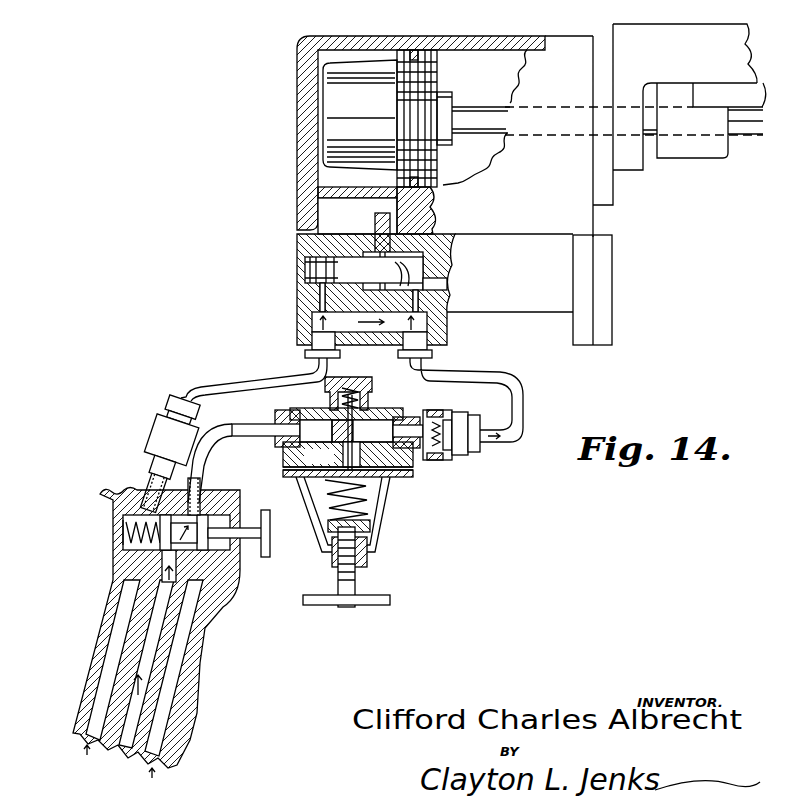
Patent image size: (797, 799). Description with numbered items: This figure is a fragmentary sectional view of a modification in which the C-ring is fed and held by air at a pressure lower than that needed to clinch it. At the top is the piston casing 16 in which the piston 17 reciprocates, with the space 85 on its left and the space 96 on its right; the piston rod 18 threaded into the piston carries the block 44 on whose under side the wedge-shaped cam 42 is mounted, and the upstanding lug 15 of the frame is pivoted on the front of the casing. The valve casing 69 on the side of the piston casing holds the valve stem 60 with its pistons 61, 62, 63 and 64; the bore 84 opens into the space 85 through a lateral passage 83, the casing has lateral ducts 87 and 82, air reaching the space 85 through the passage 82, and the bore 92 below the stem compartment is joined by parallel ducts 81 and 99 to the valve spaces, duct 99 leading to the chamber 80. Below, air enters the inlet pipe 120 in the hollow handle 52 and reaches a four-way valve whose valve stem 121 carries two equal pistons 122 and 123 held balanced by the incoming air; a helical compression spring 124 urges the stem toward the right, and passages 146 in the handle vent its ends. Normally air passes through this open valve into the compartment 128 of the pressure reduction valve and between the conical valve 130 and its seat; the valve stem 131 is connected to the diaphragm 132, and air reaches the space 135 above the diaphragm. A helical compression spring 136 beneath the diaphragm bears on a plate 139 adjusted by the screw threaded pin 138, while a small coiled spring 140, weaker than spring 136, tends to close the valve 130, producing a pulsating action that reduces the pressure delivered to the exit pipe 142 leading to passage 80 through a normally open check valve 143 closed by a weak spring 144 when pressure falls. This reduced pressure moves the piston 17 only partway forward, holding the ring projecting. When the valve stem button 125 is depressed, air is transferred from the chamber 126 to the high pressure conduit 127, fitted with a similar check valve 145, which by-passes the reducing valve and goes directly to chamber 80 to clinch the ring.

The piston casing 16 is at (299, 92).
The space at left side of piston 85 is at (367, 63).
The piston 17 is at (386, 112).
The space at right of piston 96 is at (514, 94).
The wedge-shaped cam 42 is at (729, 95).
The piston rod 18 is at (742, 130).
The block 44 is at (707, 152).
The upstanding lug 15 is at (632, 168).
The lateral passage 83 is at (330, 196).
The bore 84 is at (357, 216).
The lateral duct 87 is at (374, 224).
The lateral duct 82 is at (432, 226).
The valve piston 61 is at (312, 247).
The valve piston 62 is at (354, 256).
The valve casing 69 is at (300, 278).
The valve stem 60 is at (364, 270).
The valve space 80 is at (403, 286).
The valve piston 64 is at (432, 279).
The duct 99 is at (322, 297).
The valve piston 63 is at (369, 297).
The bore 92 is at (369, 322).
The duct 81 is at (450, 313).
The high pressure conduit 127 is at (237, 382).
The small coiled spring 140 is at (368, 347).
The conical valve 130 is at (362, 408).
The check valve 143 is at (426, 416).
The exit pipe 142 is at (520, 406).
The check valve 145 is at (165, 440).
The compartment 128 is at (317, 427).
The valve stem 131 is at (377, 432).
The weak spring 144 is at (455, 440).
The piston 122 is at (140, 507).
The piston 123 is at (218, 512).
The space above diaphragm 135 is at (348, 432).
The valve stem button 125 is at (268, 520).
The diaphragm 132 is at (390, 481).
The helical compression spring 136 is at (377, 510).
The helical compression spring 124 is at (122, 538).
The plate 139 is at (370, 537).
The valve stem 121 is at (247, 553).
The screw threaded pin 138 is at (355, 583).
The chamber 126 is at (190, 545).
The passages 146 is at (113, 652).
The inlet pipe 120 is at (146, 679).
The hollow handle 52 is at (200, 720).